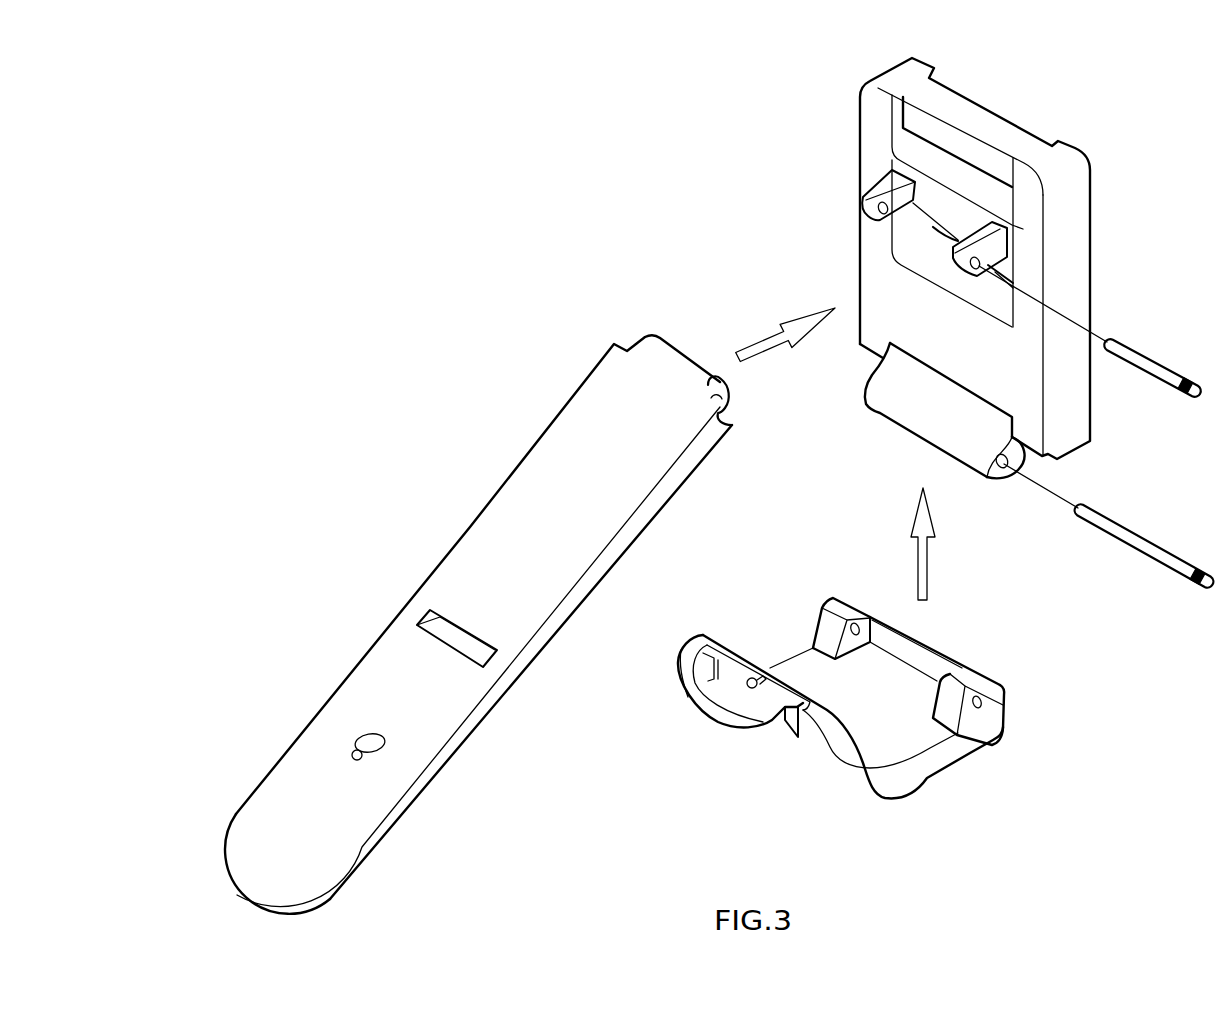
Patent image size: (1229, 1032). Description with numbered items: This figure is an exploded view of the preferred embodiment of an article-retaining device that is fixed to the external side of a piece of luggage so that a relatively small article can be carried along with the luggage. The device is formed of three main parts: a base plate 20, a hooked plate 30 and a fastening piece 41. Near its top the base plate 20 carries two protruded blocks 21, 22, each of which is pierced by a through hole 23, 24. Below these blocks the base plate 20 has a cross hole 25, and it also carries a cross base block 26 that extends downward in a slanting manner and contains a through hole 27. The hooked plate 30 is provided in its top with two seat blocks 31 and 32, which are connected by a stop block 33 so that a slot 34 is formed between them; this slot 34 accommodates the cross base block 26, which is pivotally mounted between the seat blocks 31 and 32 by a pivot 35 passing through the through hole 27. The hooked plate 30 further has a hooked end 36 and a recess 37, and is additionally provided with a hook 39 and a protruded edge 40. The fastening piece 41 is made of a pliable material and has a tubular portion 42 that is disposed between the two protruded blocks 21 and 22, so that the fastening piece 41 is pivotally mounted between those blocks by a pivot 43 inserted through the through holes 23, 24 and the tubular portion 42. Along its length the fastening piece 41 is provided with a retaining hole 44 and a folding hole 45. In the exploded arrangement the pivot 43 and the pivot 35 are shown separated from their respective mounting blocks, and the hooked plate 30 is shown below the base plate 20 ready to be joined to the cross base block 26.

The base plate 20 is at (1090, 160).
The protruded block 21 is at (858, 176).
The protruded block 22 is at (987, 231).
The through hole 23 is at (883, 205).
The through hole 24 is at (1047, 236).
The cross hole 25 is at (912, 243).
The cross base block 26 is at (917, 405).
The through hole 27 is at (1000, 468).
The hooked plate 30 is at (925, 780).
The seat block 31 is at (957, 720).
The seat block 32 is at (821, 633).
The stop block 33 is at (915, 638).
The slot 34 is at (913, 682).
The pivot 35 is at (1130, 547).
The hooked end 36 is at (740, 647).
The recess 37 is at (788, 723).
The hook 39 is at (750, 690).
The protruded edge 40 is at (707, 668).
The fastening piece 41 is at (462, 532).
The tubular portion 42 is at (718, 392).
The pivot 43 is at (1147, 377).
The retaining hole 44 is at (370, 748).
The folding hole 45 is at (467, 650).